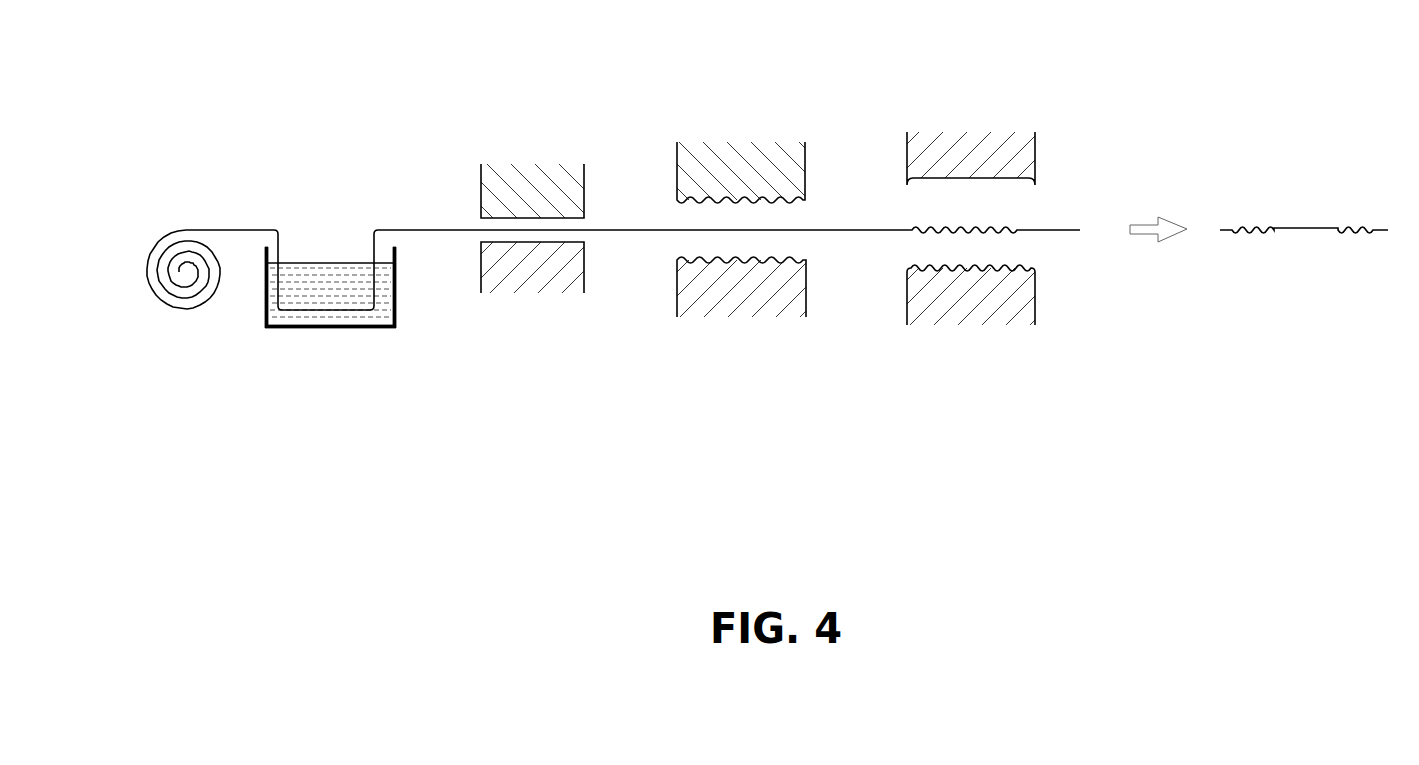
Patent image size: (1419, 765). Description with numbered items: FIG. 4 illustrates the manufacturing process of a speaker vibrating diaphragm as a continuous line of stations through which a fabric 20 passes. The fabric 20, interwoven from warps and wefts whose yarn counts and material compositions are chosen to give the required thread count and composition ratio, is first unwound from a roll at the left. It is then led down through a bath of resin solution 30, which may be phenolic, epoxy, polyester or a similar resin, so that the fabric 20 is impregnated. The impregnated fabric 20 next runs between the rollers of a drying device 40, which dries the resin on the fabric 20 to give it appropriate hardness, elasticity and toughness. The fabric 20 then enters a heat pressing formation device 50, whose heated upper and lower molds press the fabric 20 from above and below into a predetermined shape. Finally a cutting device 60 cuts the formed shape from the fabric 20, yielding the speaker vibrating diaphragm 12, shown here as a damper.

The speaker vibrating diaphragm 12 is at (1290, 200).
The fabric 20 is at (193, 313).
The resin solution 30 is at (333, 328).
The drying device 40 is at (519, 129).
The heat pressing formation device 50 is at (770, 105).
The cutting device 60 is at (1002, 104).